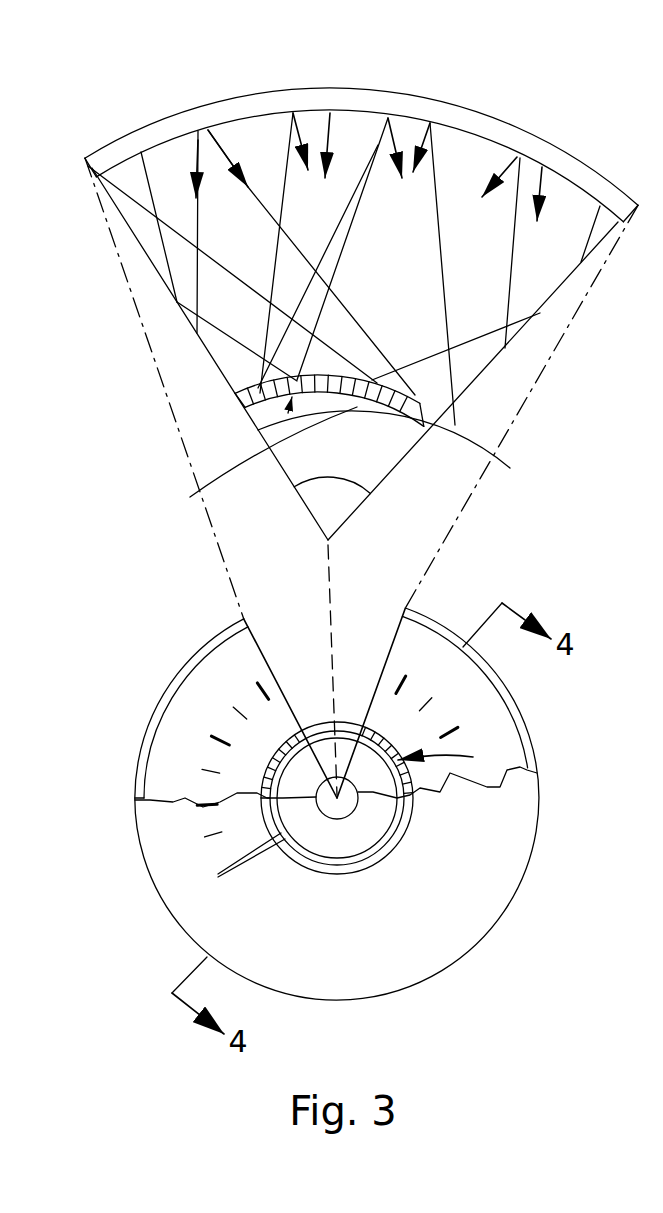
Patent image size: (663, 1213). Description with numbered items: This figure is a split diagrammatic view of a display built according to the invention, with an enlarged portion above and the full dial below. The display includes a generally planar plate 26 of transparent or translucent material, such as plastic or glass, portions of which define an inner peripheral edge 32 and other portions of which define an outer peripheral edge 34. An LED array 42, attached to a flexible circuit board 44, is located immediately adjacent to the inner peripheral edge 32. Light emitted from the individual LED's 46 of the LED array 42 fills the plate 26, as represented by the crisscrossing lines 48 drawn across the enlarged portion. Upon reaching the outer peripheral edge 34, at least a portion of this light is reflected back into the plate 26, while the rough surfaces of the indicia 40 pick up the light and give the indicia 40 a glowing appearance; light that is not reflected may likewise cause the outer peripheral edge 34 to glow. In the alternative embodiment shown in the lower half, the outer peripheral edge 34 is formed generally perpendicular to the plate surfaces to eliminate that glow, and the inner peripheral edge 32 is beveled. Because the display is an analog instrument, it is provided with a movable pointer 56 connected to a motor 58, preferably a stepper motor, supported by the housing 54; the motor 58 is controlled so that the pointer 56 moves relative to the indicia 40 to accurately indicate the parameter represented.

The plate 26 is at (412, 137).
The inner peripheral edge 32 is at (219, 534).
The outer peripheral edge 34 is at (270, 103).
The indicia 40 is at (235, 667).
The LED array 42 is at (190, 497).
The flexible circuit board 44 is at (510, 468).
The individual LED's 46 is at (250, 412).
The crisscrossing lines 48 is at (378, 145).
The housing 54 is at (358, 866).
The pointer 56 is at (246, 865).
The motor 58 is at (377, 468).